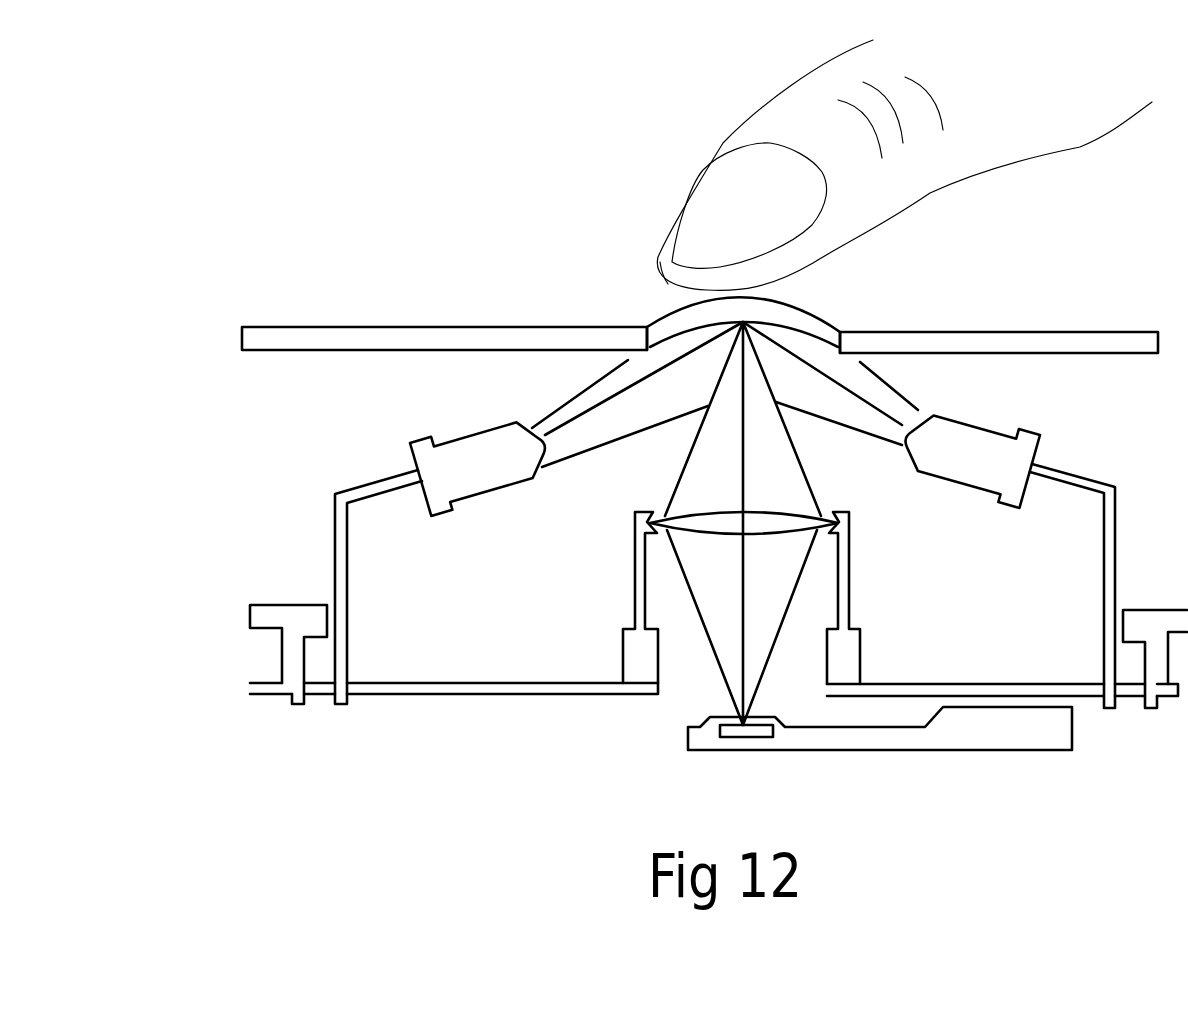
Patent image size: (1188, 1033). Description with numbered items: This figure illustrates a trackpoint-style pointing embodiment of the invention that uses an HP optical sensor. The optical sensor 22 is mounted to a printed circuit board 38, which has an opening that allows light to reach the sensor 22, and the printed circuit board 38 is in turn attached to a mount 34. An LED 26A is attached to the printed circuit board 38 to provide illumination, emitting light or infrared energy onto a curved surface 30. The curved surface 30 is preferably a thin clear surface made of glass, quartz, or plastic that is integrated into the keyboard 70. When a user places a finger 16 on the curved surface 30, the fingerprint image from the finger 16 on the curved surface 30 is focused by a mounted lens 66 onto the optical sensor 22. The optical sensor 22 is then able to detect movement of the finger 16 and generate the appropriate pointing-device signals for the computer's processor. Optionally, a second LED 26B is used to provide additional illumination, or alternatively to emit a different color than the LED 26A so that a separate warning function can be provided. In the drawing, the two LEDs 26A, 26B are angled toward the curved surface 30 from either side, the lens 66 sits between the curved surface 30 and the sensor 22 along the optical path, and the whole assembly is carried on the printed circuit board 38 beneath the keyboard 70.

The finger 16 is at (658, 262).
The curved surface 30 is at (670, 317).
The keyboard 70 is at (1098, 343).
The LED 26A is at (465, 468).
The second LED 26B is at (1007, 455).
The mounted lens 66 is at (782, 523).
The mount 34 is at (292, 622).
The printed circuit board 38 is at (515, 687).
The optical sensor 22 is at (728, 740).